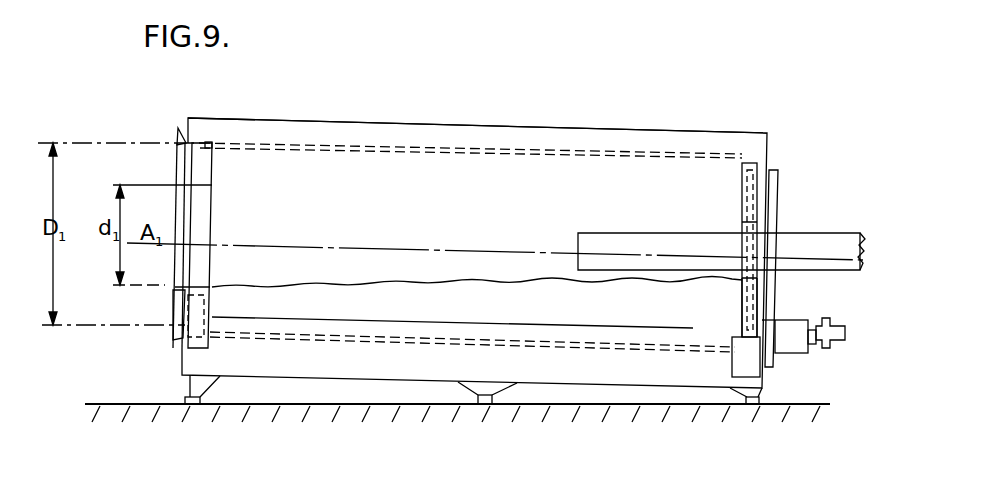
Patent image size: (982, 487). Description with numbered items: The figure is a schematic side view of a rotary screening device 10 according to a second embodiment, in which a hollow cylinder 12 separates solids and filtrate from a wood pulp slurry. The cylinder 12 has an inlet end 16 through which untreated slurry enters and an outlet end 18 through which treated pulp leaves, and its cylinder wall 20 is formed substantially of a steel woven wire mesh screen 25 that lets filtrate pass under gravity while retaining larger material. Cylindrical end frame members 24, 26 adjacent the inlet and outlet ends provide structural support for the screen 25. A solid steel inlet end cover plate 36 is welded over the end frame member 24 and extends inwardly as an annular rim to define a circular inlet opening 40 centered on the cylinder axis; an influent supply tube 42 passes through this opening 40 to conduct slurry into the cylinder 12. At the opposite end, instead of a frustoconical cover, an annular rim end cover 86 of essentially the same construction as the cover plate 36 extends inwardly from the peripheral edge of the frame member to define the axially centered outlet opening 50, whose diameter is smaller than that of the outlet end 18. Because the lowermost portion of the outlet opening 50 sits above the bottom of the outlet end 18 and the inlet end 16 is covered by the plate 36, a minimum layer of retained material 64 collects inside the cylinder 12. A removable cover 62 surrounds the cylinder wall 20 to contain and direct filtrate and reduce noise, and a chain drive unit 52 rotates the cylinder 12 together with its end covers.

The rotary screening device 10 is at (684, 106).
The hollow cylinder 12 is at (616, 356).
The inlet end 16 is at (760, 340).
The outlet end 18 is at (178, 140).
The cylinder wall 20 is at (463, 147).
The cylindrical end frame member 24 is at (742, 298).
The wire mesh screen 25 is at (523, 150).
The cylindrical end frame member 26 is at (218, 145).
The inlet end cover plate 36 is at (757, 190).
The inlet opening 40 is at (758, 228).
The influent supply tube 42 is at (808, 240).
The outlet opening 50 is at (195, 212).
The chain drive unit 52 is at (836, 341).
The removable cover 62 is at (363, 122).
The layer of retained material 64 is at (497, 318).
The annular rim end cover 86 is at (178, 303).